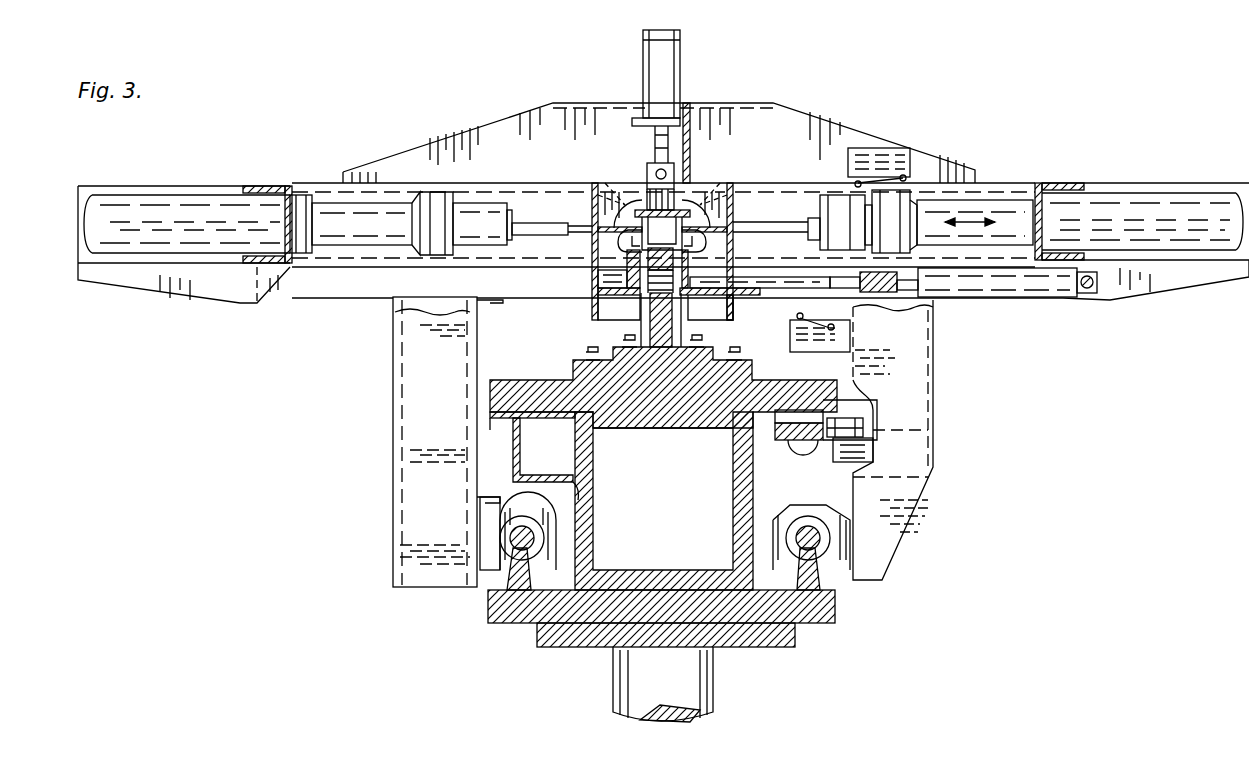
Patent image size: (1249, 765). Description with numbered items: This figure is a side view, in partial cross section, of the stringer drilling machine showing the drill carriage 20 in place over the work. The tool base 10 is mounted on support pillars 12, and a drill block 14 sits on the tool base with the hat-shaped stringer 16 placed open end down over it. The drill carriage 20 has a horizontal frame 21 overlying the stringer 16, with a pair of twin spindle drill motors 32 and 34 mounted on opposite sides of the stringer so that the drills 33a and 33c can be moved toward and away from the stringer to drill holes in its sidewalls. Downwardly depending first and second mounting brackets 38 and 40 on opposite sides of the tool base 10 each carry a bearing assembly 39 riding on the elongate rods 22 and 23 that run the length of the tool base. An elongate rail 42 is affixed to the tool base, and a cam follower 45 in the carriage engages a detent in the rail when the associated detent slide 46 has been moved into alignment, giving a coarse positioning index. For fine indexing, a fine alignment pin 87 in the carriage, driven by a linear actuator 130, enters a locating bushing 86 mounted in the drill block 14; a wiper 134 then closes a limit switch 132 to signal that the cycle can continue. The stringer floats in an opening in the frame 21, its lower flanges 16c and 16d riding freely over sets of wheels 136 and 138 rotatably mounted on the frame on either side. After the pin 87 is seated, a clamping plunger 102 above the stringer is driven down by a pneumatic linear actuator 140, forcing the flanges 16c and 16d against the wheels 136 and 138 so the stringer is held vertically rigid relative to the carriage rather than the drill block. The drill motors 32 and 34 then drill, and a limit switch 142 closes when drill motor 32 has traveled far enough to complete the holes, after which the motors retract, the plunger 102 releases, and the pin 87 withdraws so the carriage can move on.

The tool base 10 is at (768, 390).
The support pillars 12 is at (700, 690).
The drill block 14 is at (662, 340).
The stringer 16 is at (676, 205).
The lower flange 16c is at (704, 258).
The lower flange 16d is at (623, 262).
The drill carriage 20 is at (978, 166).
The horizontal frame 21 is at (296, 288).
The elongate rod 22 is at (813, 563).
The elongate rod 23 is at (512, 573).
The twin spindle drill motor 32 is at (836, 203).
The drill 33a is at (745, 227).
The drill 33c is at (584, 227).
The twin spindle drill motor 34 is at (494, 203).
The first mounting bracket 38 is at (913, 397).
The bearing assembly 39 is at (523, 520).
The second mounting bracket 40 is at (412, 397).
The rail 42 is at (813, 421).
The cam follower 45 is at (865, 425).
The detent slide 46 is at (777, 441).
The locating bushing 86 is at (648, 318).
The fine alignment pin 87 is at (735, 290).
The clamping plunger 102 is at (650, 207).
The linear actuator 130 is at (1050, 297).
The limit switch 132 is at (824, 338).
The wiper 134 is at (933, 302).
The wheels 136 is at (697, 282).
The wheels 138 is at (633, 273).
The pneumatic linear actuator 140 is at (674, 70).
The limit switch 142 is at (903, 158).